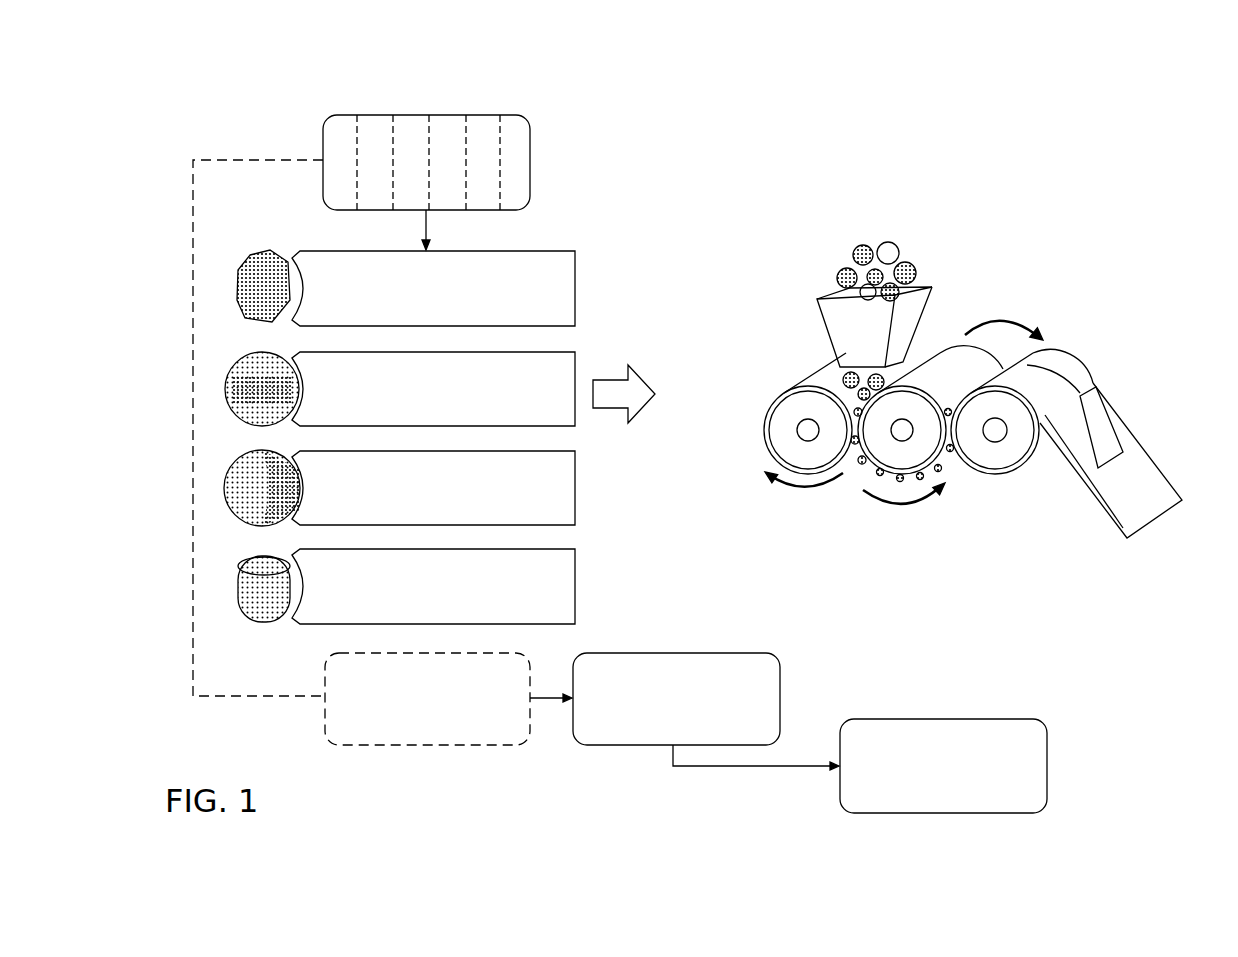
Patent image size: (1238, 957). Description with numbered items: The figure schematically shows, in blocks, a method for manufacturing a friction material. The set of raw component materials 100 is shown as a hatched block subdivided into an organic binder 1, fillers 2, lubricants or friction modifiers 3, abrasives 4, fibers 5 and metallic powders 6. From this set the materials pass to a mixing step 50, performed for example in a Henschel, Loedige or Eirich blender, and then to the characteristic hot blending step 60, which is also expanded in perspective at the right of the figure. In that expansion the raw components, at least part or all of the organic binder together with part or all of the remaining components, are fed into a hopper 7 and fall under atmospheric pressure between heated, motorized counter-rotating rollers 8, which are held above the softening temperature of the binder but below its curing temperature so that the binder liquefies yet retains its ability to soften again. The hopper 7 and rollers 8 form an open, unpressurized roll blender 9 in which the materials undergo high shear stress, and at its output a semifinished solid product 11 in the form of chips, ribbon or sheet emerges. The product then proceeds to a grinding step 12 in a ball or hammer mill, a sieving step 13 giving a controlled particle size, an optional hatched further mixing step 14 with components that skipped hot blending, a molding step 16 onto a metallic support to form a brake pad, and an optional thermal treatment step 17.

The set of raw component materials 100 is at (520, 150).
The organic binder 1 is at (338, 130).
The abrasives 4 is at (376, 128).
The fillers 2 is at (416, 140).
The fibers 5 is at (446, 130).
The metallic powders 6 is at (484, 125).
The lubricants or friction modifiers 3 is at (507, 130).
The mixing step 50 is at (565, 262).
The hot blending step 60 is at (567, 362).
The grinding step 12 is at (565, 480).
The sieving or screening step 13 is at (565, 580).
The further mixing step 14 is at (427, 725).
The molding step 16 is at (728, 662).
The thermal treatment step 17 is at (946, 730).
The hopper 7 is at (840, 340).
The rollers 8 is at (780, 432).
The roll blender 9 is at (972, 500).
The semifinished solid product 11 is at (1100, 433).